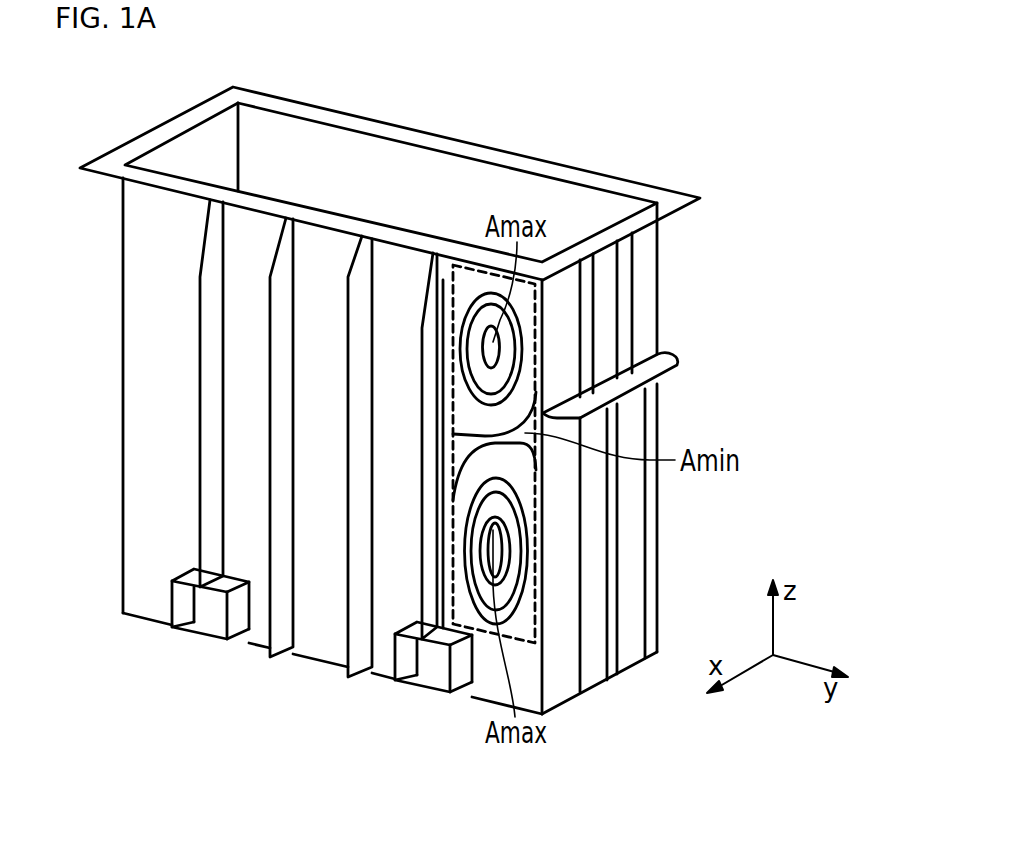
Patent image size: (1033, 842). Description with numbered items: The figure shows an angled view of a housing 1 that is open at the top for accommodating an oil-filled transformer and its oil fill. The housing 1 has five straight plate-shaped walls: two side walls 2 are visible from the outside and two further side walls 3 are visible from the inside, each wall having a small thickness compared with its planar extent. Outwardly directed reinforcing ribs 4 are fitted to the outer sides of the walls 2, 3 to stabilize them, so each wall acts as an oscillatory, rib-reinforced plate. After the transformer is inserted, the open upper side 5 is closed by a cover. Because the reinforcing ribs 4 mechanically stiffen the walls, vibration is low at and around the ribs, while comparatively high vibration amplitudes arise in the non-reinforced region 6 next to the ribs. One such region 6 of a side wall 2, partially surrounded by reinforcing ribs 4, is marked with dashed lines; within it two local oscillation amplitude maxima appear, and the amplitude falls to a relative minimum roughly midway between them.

The housing 1 is at (658, 130).
The side wall 2 is at (133, 362).
The further side wall 3 is at (188, 145).
The reinforcing rib 4 is at (700, 198).
The open upper side 5 is at (428, 118).
The non-reinforced region 6 is at (135, 300).